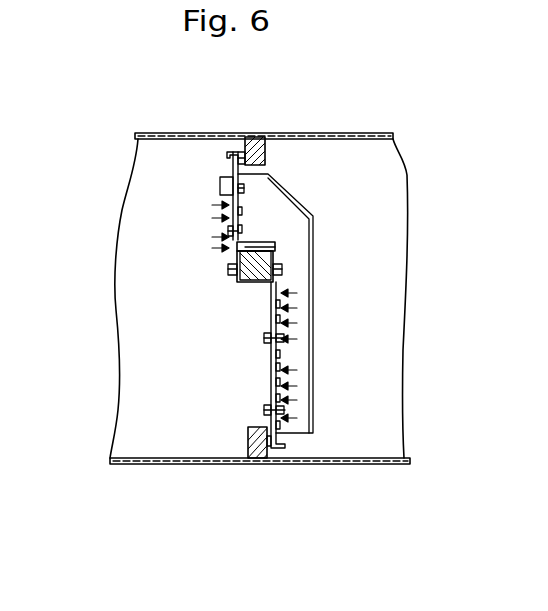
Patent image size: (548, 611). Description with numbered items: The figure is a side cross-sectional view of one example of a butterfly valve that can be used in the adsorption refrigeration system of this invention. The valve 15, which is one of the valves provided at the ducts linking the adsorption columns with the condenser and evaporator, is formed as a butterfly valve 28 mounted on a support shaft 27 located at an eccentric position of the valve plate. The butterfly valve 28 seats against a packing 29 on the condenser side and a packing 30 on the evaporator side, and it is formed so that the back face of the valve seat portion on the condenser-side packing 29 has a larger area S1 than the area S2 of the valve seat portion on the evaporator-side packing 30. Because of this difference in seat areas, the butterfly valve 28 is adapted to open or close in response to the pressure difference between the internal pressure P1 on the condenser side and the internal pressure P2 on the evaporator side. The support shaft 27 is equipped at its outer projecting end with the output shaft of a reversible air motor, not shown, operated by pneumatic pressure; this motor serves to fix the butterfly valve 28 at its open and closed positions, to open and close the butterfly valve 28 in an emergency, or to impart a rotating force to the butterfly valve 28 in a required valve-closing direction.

The valve 15 is at (333, 130).
The support shaft 27 is at (277, 252).
The butterfly valve 28 is at (271, 313).
The packing 29 is at (272, 465).
The packing 30 is at (244, 148).
The area of condenser-side valve seat portion S1 is at (280, 352).
The area of evaporator-side valve seat portion S2 is at (230, 210).
The internal pressure on condenser side P1 is at (392, 257).
The internal pressure on evaporator side P2 is at (135, 253).